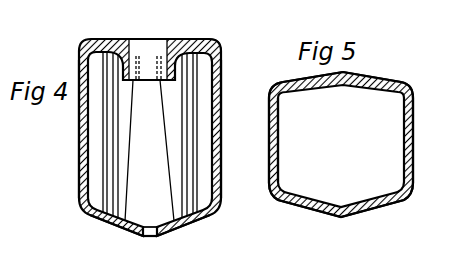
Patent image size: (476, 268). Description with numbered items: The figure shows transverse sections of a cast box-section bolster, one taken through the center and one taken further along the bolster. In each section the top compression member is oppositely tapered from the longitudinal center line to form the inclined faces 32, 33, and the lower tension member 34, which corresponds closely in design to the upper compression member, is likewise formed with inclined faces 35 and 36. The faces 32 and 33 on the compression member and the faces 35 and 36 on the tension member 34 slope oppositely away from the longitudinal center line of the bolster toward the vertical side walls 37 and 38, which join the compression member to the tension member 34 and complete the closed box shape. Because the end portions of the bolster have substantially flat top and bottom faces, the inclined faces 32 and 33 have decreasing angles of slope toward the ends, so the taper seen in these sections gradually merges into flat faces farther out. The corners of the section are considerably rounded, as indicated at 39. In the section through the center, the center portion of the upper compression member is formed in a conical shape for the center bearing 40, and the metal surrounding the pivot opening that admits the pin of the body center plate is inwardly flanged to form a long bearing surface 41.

In FIG. 5, the inclined face 32 is at (298, 74).
In FIG. 5, the inclined face 33 is at (380, 76).
In FIG. 4, the lower tension member 34 is at (126, 222).
In FIG. 4, the inclined face 35 is at (102, 221).
In FIG. 5, the inclined face 35 is at (311, 208).
In FIG. 4, the inclined face 36 is at (181, 219).
In FIG. 5, the inclined face 36 is at (373, 207).
In FIG. 4, the vertical side wall 37 is at (80, 141).
In FIG. 5, the vertical side wall 37 is at (280, 145).
In FIG. 4, the vertical side wall 38 is at (221, 131).
In FIG. 5, the vertical side wall 38 is at (268, 123).
In FIG. 5, the rounded corner 39 is at (270, 90).
In FIG. 4, the center bearing 40 is at (181, 42).
In FIG. 4, the bearing surface 41 is at (149, 40).